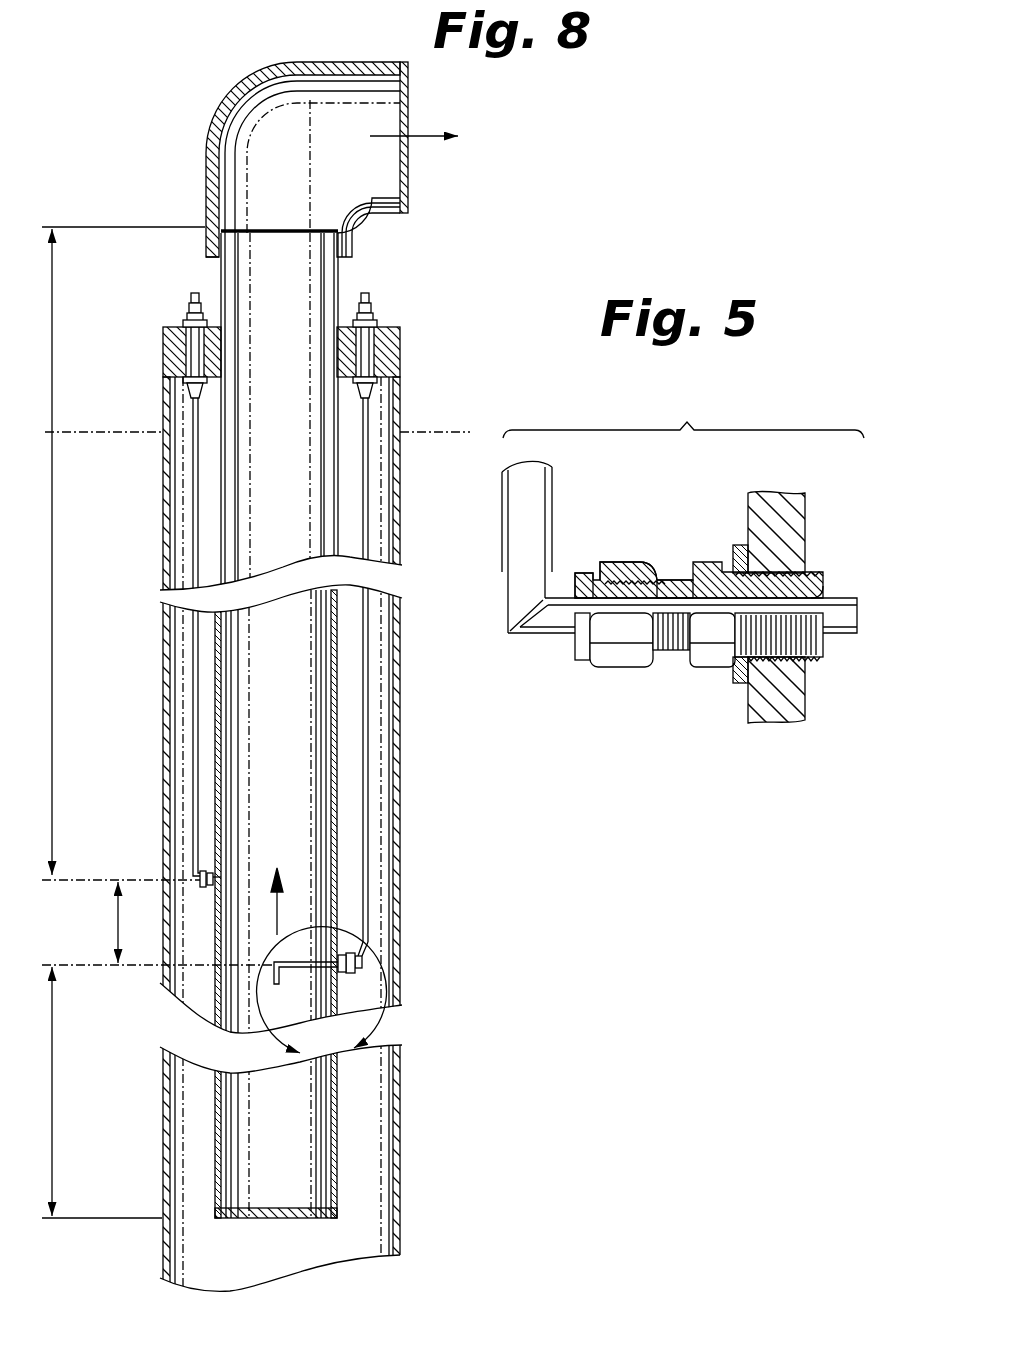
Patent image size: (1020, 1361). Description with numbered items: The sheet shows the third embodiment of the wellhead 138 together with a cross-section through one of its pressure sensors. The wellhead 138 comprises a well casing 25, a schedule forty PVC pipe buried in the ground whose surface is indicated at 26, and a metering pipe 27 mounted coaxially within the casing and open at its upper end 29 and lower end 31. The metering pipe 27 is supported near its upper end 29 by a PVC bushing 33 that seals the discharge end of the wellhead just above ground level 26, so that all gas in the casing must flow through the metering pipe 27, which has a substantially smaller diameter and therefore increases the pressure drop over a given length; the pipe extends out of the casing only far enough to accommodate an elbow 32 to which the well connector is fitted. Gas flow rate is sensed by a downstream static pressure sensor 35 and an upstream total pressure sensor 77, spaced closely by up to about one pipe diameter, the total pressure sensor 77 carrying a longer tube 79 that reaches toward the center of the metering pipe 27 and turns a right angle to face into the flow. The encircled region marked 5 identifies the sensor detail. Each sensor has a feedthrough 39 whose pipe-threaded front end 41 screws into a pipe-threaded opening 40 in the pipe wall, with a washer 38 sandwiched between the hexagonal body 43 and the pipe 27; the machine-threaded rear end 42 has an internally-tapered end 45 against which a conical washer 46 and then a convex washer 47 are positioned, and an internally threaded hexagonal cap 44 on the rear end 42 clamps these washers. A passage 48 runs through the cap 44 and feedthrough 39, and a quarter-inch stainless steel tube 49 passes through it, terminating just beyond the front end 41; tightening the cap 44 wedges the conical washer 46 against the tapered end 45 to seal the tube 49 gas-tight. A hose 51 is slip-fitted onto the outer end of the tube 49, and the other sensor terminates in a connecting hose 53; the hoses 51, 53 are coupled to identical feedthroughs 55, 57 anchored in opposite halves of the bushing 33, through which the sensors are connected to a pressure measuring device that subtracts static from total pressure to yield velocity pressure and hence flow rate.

In FIG. 8, the wellhead 138 is at (247, 67).
In FIG. 8, the elbow 32 is at (332, 62).
In FIG. 8, the upper end of metering pipe 29 is at (293, 228).
In FIG. 8, the PVC bushing 33 is at (386, 326).
In FIG. 8, the feedthrough 55 is at (186, 357).
In FIG. 8, the feedthrough 57 is at (372, 352).
In FIG. 8, the hose 51 is at (190, 415).
In FIG. 5, the hose 51 is at (553, 495).
In FIG. 8, the ground surface 26 is at (420, 432).
In FIG. 8, the connecting hose 53 is at (372, 468).
In FIG. 8, the well casing 25 is at (402, 626).
In FIG. 8, the metering pipe 27 is at (345, 735).
In FIG. 5, the metering pipe 27 is at (805, 500).
In FIG. 8, the static pressure sensor 35 is at (222, 873).
In FIG. 5, the static pressure sensor 35 is at (694, 569).
In FIG. 8, the tube 79 is at (278, 977).
In FIG. 8, the total pressure sensor 77 is at (348, 975).
In FIG. 8, the detail circle for FIG. 5 is at (322, 990).
In FIG. 8, the lower end of metering pipe 31 is at (277, 1206).
In FIG. 5, the convex washer 47 is at (587, 580).
In FIG. 5, the hexagonal cap 44 is at (605, 565).
In FIG. 5, the conical washer 46 is at (637, 583).
In FIG. 5, the internally-tapered end 45 is at (660, 590).
In FIG. 5, the feedthrough 39 is at (714, 556).
In FIG. 5, the pipe-threaded opening 40 is at (813, 580).
In FIG. 5, the passage 48 is at (830, 598).
In FIG. 5, the pipe-threaded front end 41 is at (810, 660).
In FIG. 5, the washer 38 is at (742, 672).
In FIG. 5, the hexagonal body 43 is at (705, 668).
In FIG. 5, the machine-threaded rear end 42 is at (660, 668).
In FIG. 5, the stainless steel tube 49 is at (520, 633).